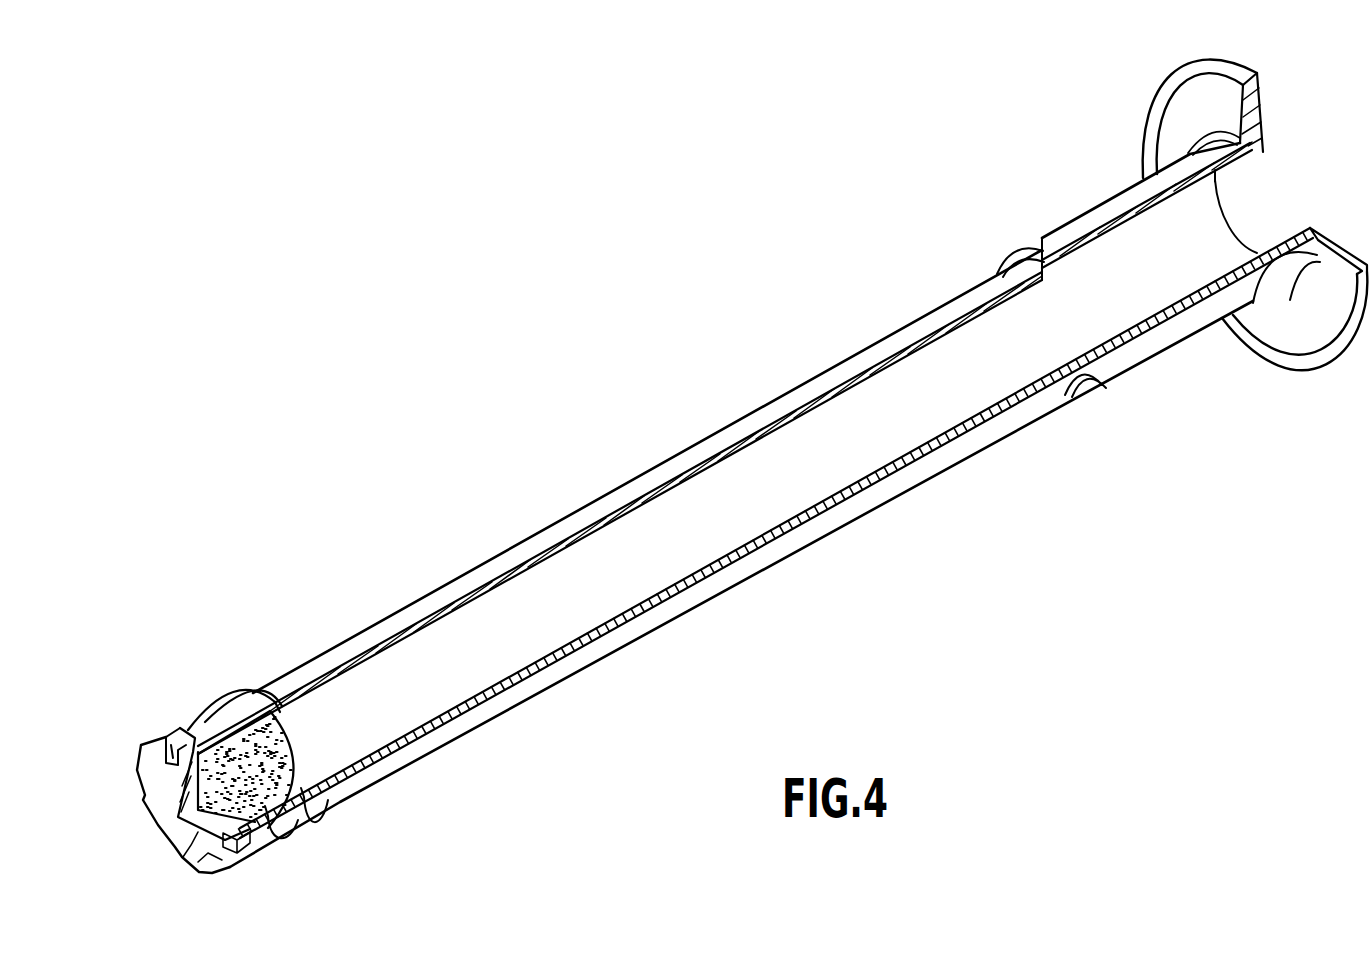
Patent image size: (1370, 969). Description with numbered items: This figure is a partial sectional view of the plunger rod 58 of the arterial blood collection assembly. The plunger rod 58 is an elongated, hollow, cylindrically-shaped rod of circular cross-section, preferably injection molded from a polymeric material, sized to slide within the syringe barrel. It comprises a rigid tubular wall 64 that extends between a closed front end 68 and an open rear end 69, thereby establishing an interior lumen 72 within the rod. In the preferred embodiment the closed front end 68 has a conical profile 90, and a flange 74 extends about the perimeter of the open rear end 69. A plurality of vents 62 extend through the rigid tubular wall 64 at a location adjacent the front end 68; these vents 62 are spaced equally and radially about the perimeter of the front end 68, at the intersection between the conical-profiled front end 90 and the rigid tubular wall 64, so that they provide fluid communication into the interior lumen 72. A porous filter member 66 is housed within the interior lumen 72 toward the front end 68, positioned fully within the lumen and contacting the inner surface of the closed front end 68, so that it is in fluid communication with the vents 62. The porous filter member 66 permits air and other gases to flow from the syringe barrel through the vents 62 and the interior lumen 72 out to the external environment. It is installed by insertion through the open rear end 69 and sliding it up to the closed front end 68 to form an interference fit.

The plunger rod 58 is at (512, 507).
The vents 62 is at (172, 757).
The rigid tubular wall 64 is at (758, 437).
The porous filter member 66 is at (323, 813).
The closed front end 68 is at (177, 694).
The open rear end 69 is at (1140, 76).
The interior lumen 72 is at (705, 539).
The flange 74 is at (1212, 103).
The conical profile 90 is at (195, 840).